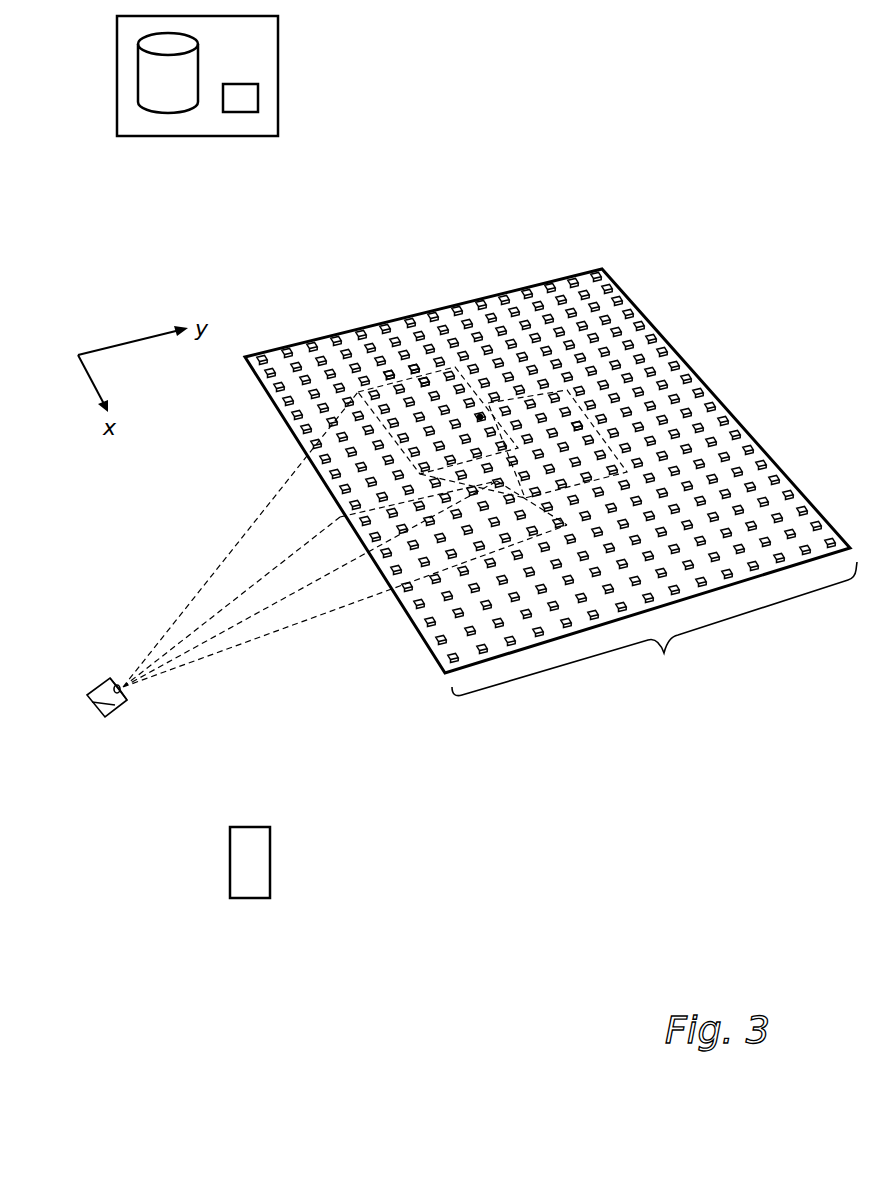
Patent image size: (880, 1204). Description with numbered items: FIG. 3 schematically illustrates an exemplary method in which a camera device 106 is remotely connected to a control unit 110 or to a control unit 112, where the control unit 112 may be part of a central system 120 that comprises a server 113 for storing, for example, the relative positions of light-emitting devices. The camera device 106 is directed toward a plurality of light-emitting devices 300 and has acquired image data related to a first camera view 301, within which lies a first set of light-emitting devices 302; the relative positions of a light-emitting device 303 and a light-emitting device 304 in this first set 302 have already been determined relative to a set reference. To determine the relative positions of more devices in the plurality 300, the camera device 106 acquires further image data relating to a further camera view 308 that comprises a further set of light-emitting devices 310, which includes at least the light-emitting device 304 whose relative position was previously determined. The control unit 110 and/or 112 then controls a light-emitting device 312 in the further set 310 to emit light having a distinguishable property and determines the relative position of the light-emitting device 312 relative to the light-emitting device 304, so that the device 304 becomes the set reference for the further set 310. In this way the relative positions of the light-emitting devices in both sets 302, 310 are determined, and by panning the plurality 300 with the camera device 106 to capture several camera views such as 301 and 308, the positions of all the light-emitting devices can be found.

The camera device 106 is at (100, 690).
The control unit 110 is at (242, 880).
The control unit 112 is at (218, 106).
The server 113 is at (152, 128).
The central system 120 is at (222, 137).
The plurality of light-emitting devices 300 is at (551, 482).
The first camera view 301 is at (383, 387).
The first set of light-emitting devices 302 is at (412, 383).
The light-emitting device 303 is at (433, 395).
The light-emitting device 304 is at (478, 415).
The further camera view 308 is at (557, 495).
The further set of light-emitting devices 310 is at (598, 470).
The light-emitting device 312 is at (575, 425).